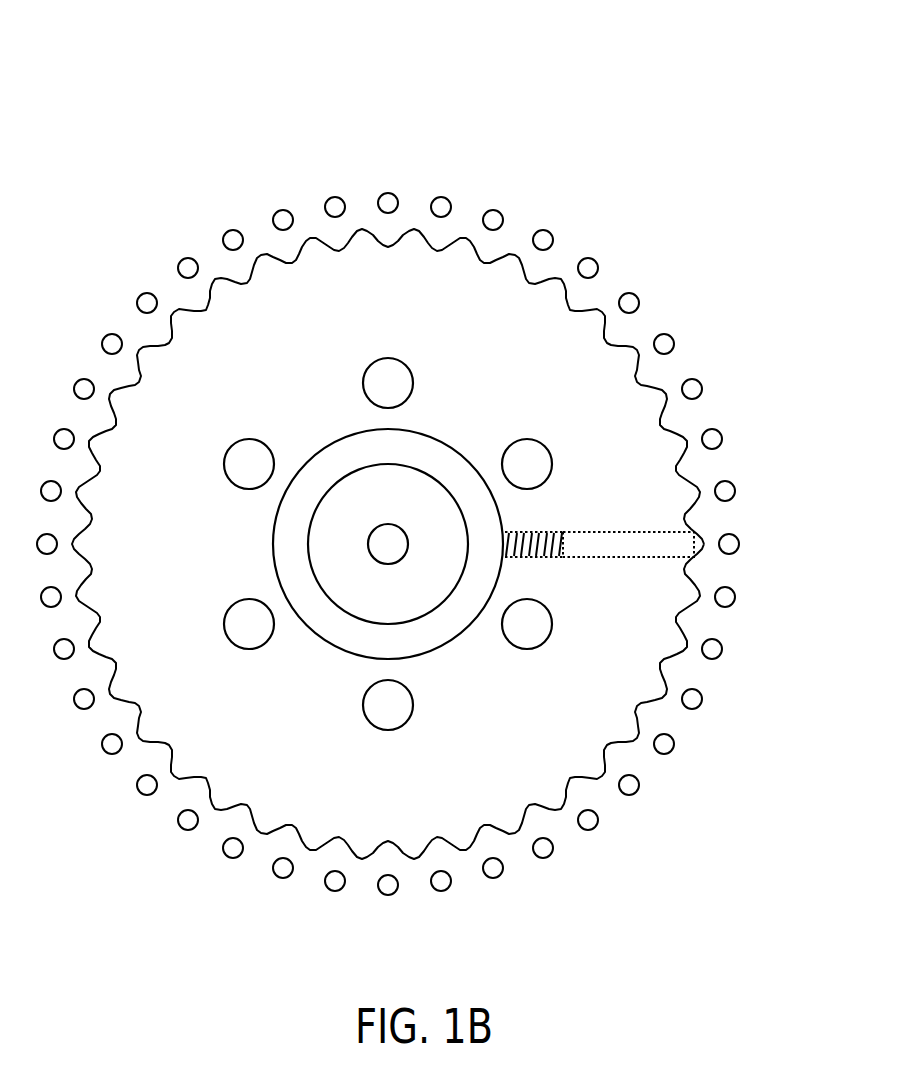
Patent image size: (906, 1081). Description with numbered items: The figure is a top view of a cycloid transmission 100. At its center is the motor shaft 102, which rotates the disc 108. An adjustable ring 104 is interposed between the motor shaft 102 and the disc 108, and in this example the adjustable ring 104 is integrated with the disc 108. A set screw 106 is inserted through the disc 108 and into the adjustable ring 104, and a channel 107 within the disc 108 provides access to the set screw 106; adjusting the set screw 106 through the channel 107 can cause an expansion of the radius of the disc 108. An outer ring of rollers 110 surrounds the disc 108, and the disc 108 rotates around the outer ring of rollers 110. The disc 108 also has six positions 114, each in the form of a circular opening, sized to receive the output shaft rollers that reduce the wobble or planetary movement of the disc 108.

The cycloid transmission 100 is at (172, 98).
The motor shaft 102 is at (427, 510).
The adjustable ring 104 is at (443, 621).
The set screw 106 is at (543, 531).
The channel 107 is at (632, 558).
The disc 108 is at (487, 787).
The outer ring of rollers 110 is at (388, 204).
The positions 114 is at (247, 458).